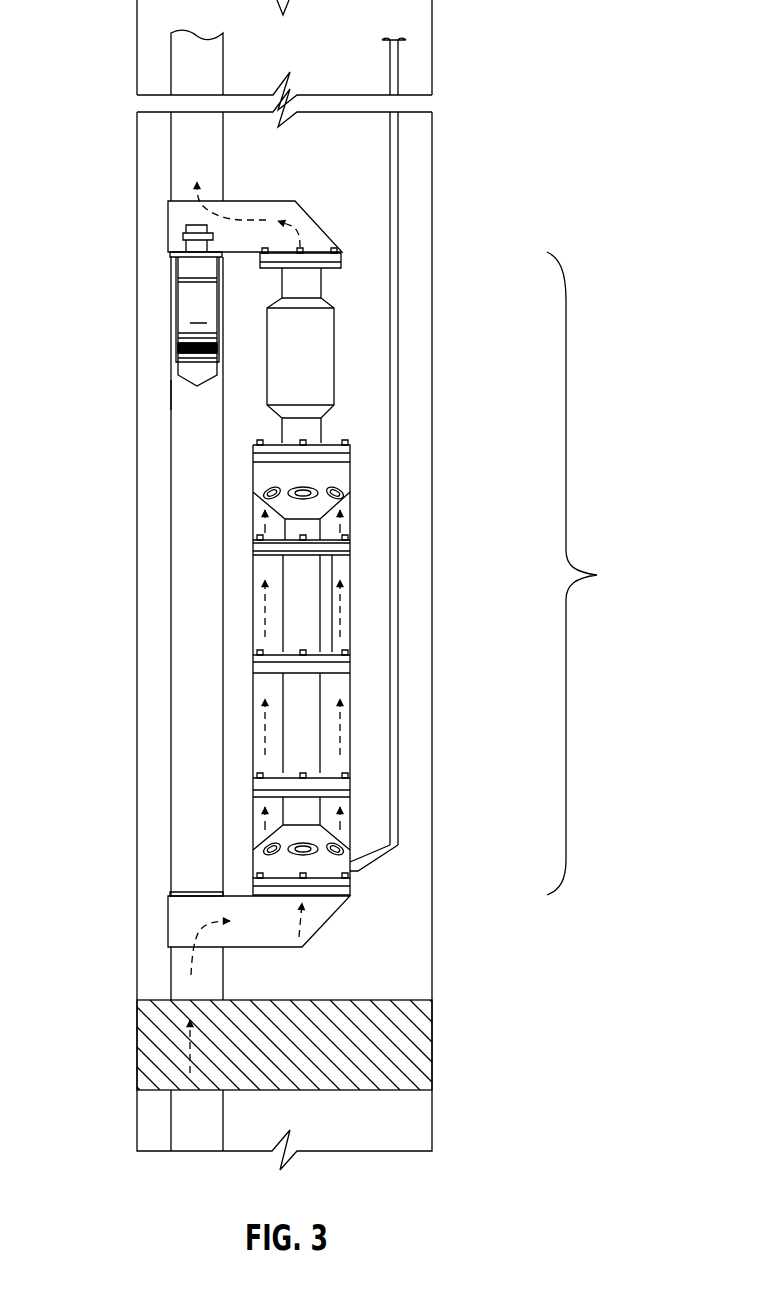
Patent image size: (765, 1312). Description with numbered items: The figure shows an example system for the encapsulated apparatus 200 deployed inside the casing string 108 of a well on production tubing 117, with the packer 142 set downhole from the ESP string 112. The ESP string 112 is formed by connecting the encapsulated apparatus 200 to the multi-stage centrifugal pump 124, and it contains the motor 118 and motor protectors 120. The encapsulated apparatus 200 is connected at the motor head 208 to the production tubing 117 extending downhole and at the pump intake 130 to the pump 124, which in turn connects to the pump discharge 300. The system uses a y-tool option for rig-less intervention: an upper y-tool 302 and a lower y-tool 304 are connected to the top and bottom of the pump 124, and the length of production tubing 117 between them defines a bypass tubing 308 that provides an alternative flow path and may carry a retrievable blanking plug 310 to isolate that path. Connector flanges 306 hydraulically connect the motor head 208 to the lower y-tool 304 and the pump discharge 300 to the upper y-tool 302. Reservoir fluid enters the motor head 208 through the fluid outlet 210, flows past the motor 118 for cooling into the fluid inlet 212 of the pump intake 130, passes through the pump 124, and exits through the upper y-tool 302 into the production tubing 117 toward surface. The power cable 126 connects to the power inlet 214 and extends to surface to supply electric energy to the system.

The casing string 108 is at (137, 46).
The production tubing 117 is at (171, 142).
The bypass tubing 308 is at (171, 396).
The upper y-tool 302 is at (322, 226).
The blanking plug 310 is at (177, 323).
The connector flange 306 is at (246, 264).
The pump discharge 300 is at (348, 286).
The multi-stage centrifugal pump 124 is at (334, 355).
The encapsulated apparatus 200 is at (368, 610).
The pump intake 130 is at (253, 478).
The fluid inlet 212 is at (350, 492).
The motor protectors 120 is at (272, 611).
The motor 118 is at (272, 731).
The motor head 208 is at (253, 864).
The fluid outlet 210 is at (351, 855).
The power cable 126 is at (398, 733).
The power inlet 214 is at (383, 863).
The lower y-tool 304 is at (343, 909).
The packer 142 is at (137, 1040).
The ESP string 112 is at (598, 573).